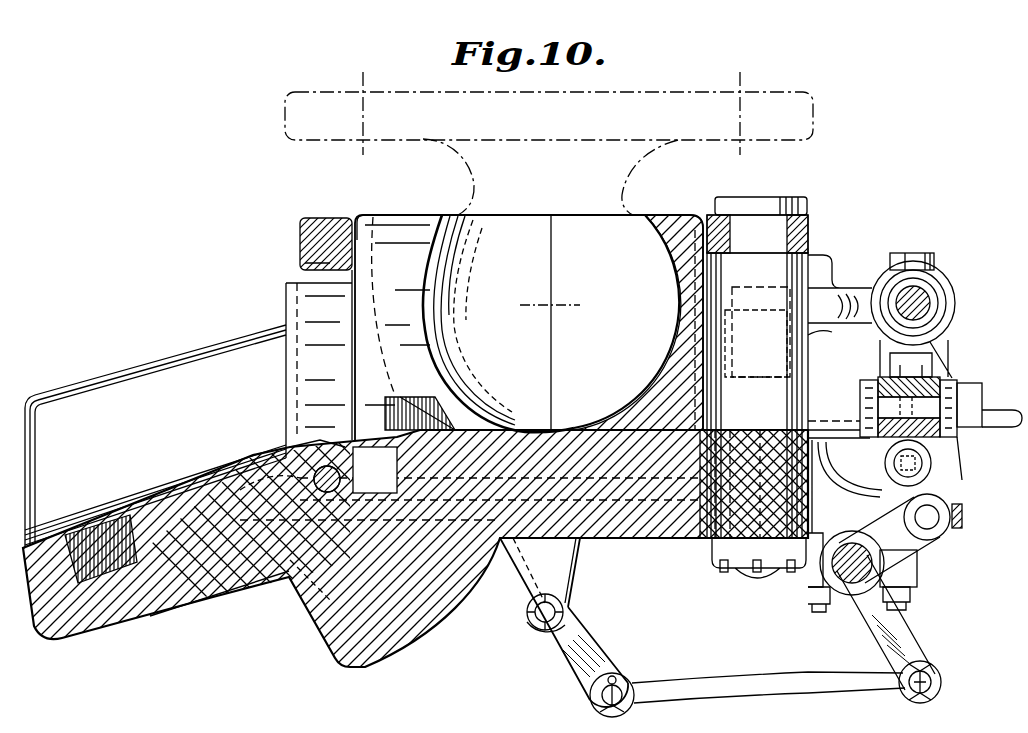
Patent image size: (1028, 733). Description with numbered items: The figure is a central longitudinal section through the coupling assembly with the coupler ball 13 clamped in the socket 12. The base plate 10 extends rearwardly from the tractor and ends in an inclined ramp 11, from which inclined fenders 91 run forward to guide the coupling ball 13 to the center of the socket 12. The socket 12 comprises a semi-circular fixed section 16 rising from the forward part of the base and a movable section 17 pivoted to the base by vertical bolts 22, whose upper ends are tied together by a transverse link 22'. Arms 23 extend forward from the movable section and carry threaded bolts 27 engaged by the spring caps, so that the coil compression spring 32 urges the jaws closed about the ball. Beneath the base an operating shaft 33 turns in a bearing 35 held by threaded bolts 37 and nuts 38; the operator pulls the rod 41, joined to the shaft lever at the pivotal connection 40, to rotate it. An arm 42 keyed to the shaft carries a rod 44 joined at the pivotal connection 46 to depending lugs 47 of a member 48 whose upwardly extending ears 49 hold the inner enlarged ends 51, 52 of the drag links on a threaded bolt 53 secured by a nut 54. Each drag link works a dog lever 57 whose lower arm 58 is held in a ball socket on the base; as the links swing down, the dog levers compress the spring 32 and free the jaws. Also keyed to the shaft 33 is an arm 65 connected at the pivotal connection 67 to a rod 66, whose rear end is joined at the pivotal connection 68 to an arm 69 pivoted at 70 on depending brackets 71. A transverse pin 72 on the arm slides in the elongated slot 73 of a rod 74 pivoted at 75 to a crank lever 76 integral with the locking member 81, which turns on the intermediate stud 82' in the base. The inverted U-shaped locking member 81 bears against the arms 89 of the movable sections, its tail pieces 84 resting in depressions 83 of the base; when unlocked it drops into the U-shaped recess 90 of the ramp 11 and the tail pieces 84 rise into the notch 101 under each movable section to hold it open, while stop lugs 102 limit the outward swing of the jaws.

The base plate 10 is at (665, 487).
The inclined ramp 11 is at (118, 587).
The cylindrical socket 12 is at (650, 206).
The coupling ball 13 is at (490, 197).
The fixed section 16 is at (675, 232).
The movable section 17 is at (380, 227).
The vertical bolts 22 is at (779, 192).
The transverse link 22' is at (790, 234).
The arms 23 is at (838, 297).
The threaded bolts 27 is at (910, 256).
The coil compression spring 32 is at (930, 280).
The operating shaft 33 is at (853, 583).
The bearing 35 is at (918, 590).
The threaded bolts 37 is at (820, 620).
The nuts 38 is at (805, 600).
The pivotal connection 40 is at (738, 416).
The rod 41 is at (1010, 430).
The arm 42 is at (905, 548).
The rod 44 is at (950, 490).
The pivotal connection 46 is at (895, 466).
The depending lugs 47 is at (900, 485).
The member 48 is at (884, 452).
The ears 49 is at (866, 388).
The inner enlarged end 51 is at (886, 380).
The inner enlarged end 52 is at (938, 380).
The threaded bolt 53 is at (880, 403).
The nut 54 is at (980, 395).
The dog lever 57 is at (946, 350).
The lower arm 58 is at (938, 480).
The arm 65 is at (893, 637).
The rod 66 is at (763, 690).
The pivotal connection 67 is at (942, 683).
The pivotal connection 68 is at (625, 685).
The arm 69 is at (578, 634).
The pivot 70 is at (562, 595).
The depending brackets 71 is at (580, 558).
The transverse pin 72 is at (546, 528).
The elongated slot 73 is at (300, 615).
The rod 74 is at (280, 578).
The pivotal connection 75 is at (234, 592).
The crank lever 76 is at (247, 497).
The locking member 81 is at (300, 244).
The intermediate stud 82' is at (290, 458).
The depressions 83 is at (420, 615).
The tail pieces 84 is at (333, 628).
The arms 89 is at (292, 292).
The U-shaped recess 90 is at (110, 530).
The inclined fenders 91 is at (95, 385).
The notch 101 is at (446, 374).
The stop lugs 102 is at (512, 402).